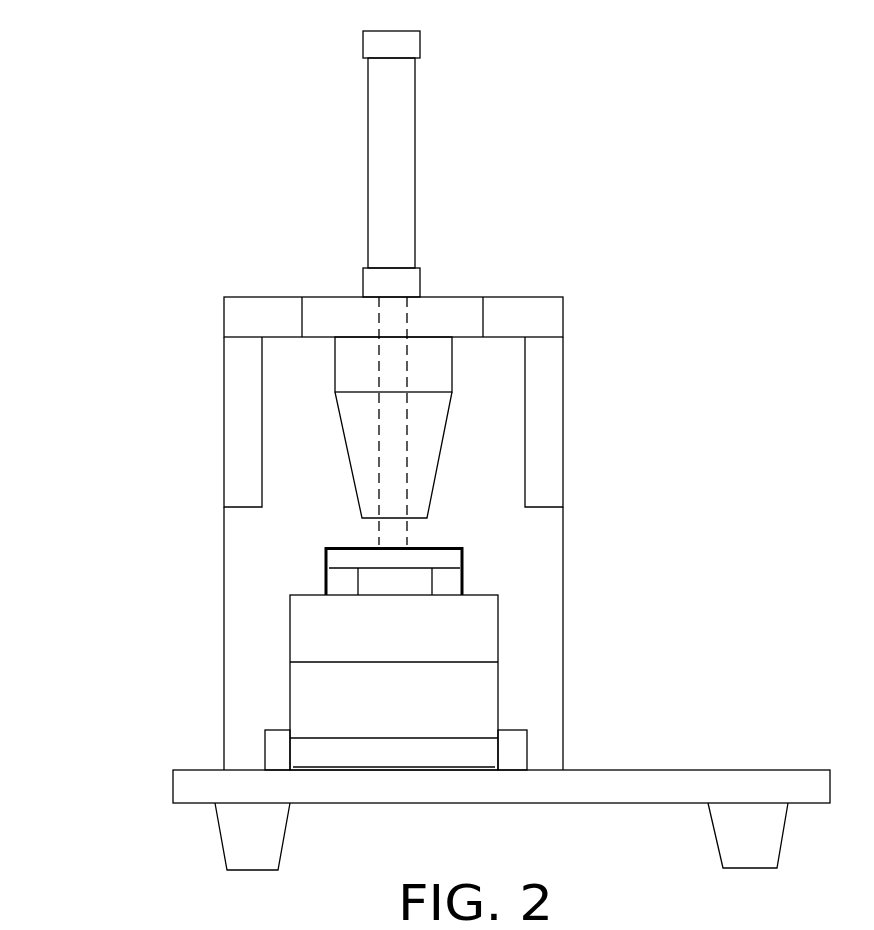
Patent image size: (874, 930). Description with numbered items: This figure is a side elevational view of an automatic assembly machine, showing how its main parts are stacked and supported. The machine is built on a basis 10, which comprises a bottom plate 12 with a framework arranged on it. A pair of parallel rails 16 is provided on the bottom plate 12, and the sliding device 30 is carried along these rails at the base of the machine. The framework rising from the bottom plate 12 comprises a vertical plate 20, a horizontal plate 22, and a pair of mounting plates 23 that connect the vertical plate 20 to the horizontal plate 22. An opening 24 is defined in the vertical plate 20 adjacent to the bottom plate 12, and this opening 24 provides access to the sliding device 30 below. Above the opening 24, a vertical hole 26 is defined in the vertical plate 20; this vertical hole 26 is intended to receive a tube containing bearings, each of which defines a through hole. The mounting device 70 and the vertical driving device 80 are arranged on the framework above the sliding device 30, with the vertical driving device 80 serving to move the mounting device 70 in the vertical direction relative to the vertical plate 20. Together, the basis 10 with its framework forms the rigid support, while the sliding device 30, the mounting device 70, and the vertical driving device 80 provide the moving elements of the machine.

The basis 10 is at (507, 772).
The bottom plate 12 is at (662, 785).
The parallel rails 16 is at (445, 768).
The vertical plate 20 is at (252, 593).
The horizontal plate 22 is at (530, 323).
The mounting plates 23 is at (542, 402).
The opening 24 is at (463, 555).
The vertical hole 26 is at (395, 355).
The sliding device 30 is at (517, 598).
The mounting device 70 is at (453, 457).
The vertical driving device 80 is at (427, 153).